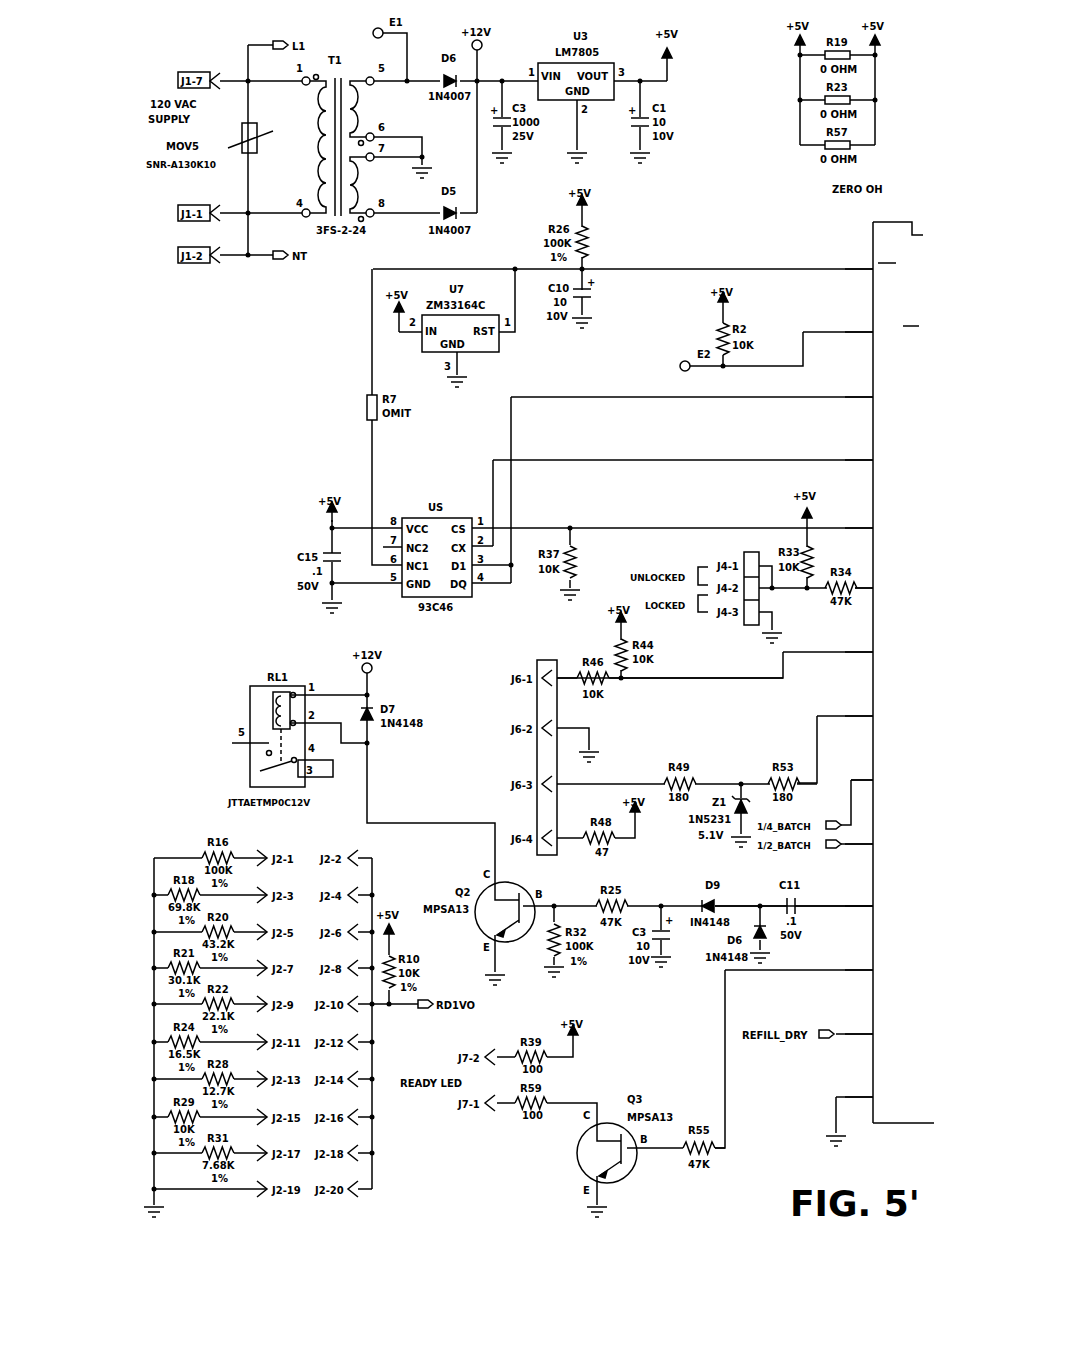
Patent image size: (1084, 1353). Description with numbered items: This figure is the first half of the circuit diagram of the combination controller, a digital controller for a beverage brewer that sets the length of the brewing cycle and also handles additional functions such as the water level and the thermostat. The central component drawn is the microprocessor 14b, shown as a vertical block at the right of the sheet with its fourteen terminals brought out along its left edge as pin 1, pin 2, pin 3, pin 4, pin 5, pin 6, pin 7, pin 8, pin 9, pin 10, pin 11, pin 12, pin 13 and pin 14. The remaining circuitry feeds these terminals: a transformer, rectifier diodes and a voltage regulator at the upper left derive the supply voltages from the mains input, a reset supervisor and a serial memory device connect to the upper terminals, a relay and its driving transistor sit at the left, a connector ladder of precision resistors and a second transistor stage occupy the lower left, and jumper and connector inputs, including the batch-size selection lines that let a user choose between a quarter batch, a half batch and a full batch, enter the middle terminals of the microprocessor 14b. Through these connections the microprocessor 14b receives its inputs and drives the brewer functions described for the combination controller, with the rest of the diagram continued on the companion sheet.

The microprocessor 14b is at (885, 675).
The RST pin 1 is at (872, 263).
The VPP/IRQ pin 2 is at (884, 326).
The PA7 pin 3 is at (872, 391).
The PA6 pin 4 is at (872, 454).
The PA5 pin 5 is at (872, 522).
The PA4 pin 6 is at (877, 582).
The PA3 pin 7 is at (872, 646).
The PA2 pin 8 is at (872, 710).
The PA1 pin 9 is at (875, 774).
The PA0 pin 10 is at (872, 838).
The PB5/SD0 pin 11 is at (885, 899).
The PB6/SD1 pin 12 is at (885, 964).
The PB7/SCK pin 13 is at (886, 1028).
The VSS pin 14 is at (872, 1091).